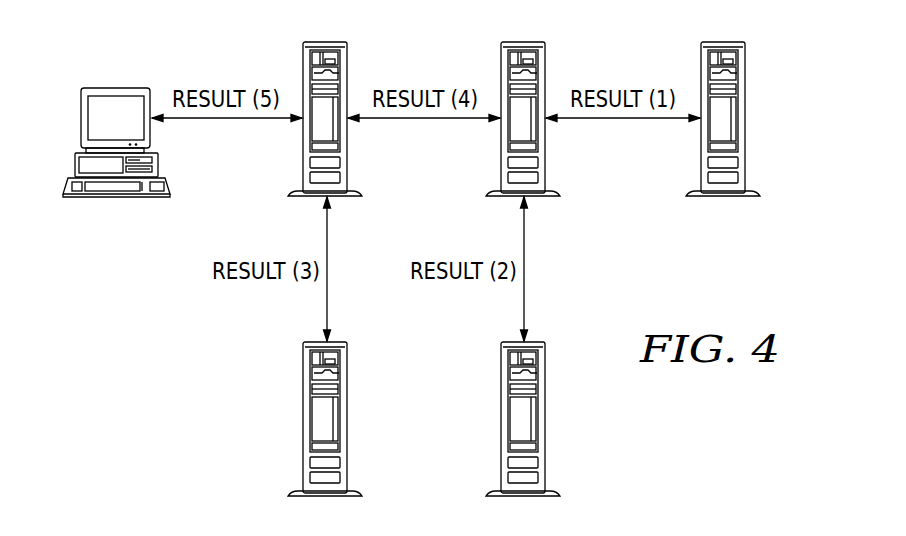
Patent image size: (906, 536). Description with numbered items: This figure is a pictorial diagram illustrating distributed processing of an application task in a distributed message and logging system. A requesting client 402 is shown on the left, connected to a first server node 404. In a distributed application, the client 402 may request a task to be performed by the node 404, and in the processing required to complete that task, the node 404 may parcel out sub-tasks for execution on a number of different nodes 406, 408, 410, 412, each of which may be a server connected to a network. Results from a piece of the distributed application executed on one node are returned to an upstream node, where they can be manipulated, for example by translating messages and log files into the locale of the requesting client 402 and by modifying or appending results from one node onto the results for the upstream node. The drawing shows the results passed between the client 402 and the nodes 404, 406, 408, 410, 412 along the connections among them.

The client 402 is at (80, 119).
The node 404 is at (348, 62).
The node 406 is at (546, 62).
The node 408 is at (546, 420).
The node 410 is at (746, 62).
The node 412 is at (303, 421).